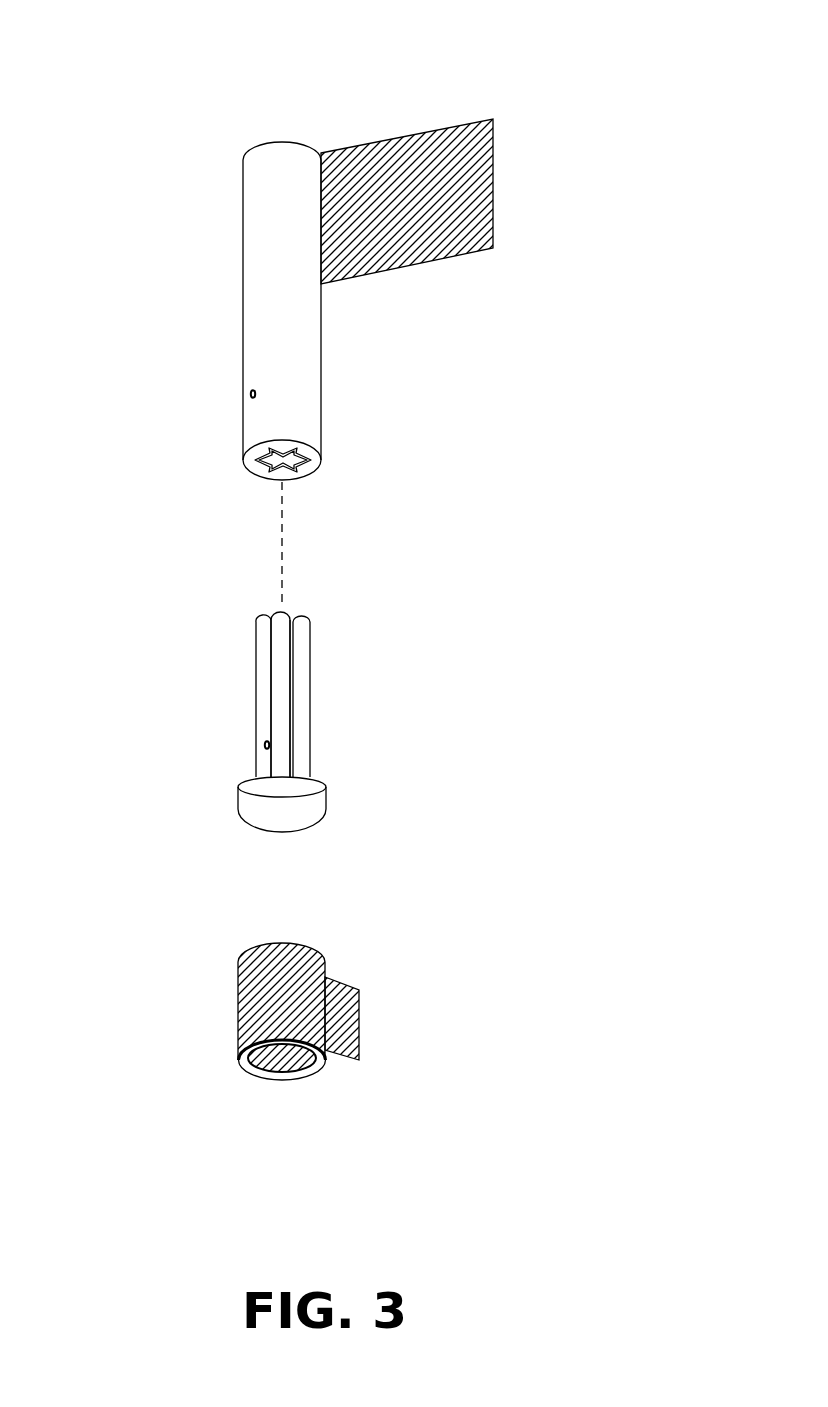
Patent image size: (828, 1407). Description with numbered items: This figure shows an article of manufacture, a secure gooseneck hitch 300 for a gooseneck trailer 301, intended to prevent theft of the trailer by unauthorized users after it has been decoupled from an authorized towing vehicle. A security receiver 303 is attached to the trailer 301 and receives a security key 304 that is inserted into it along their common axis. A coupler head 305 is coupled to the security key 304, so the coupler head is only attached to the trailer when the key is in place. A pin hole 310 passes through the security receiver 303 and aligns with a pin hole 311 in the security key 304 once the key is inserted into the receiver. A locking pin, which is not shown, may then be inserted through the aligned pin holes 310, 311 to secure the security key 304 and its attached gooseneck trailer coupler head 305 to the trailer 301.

The secure gooseneck hitch 300 is at (132, 46).
The gooseneck trailer 301 is at (401, 137).
The security receiver 303 is at (248, 468).
The security key 304 is at (260, 813).
The coupler head 305 is at (238, 1018).
The pin hole 310 is at (243, 393).
The pin hole 311 is at (264, 745).